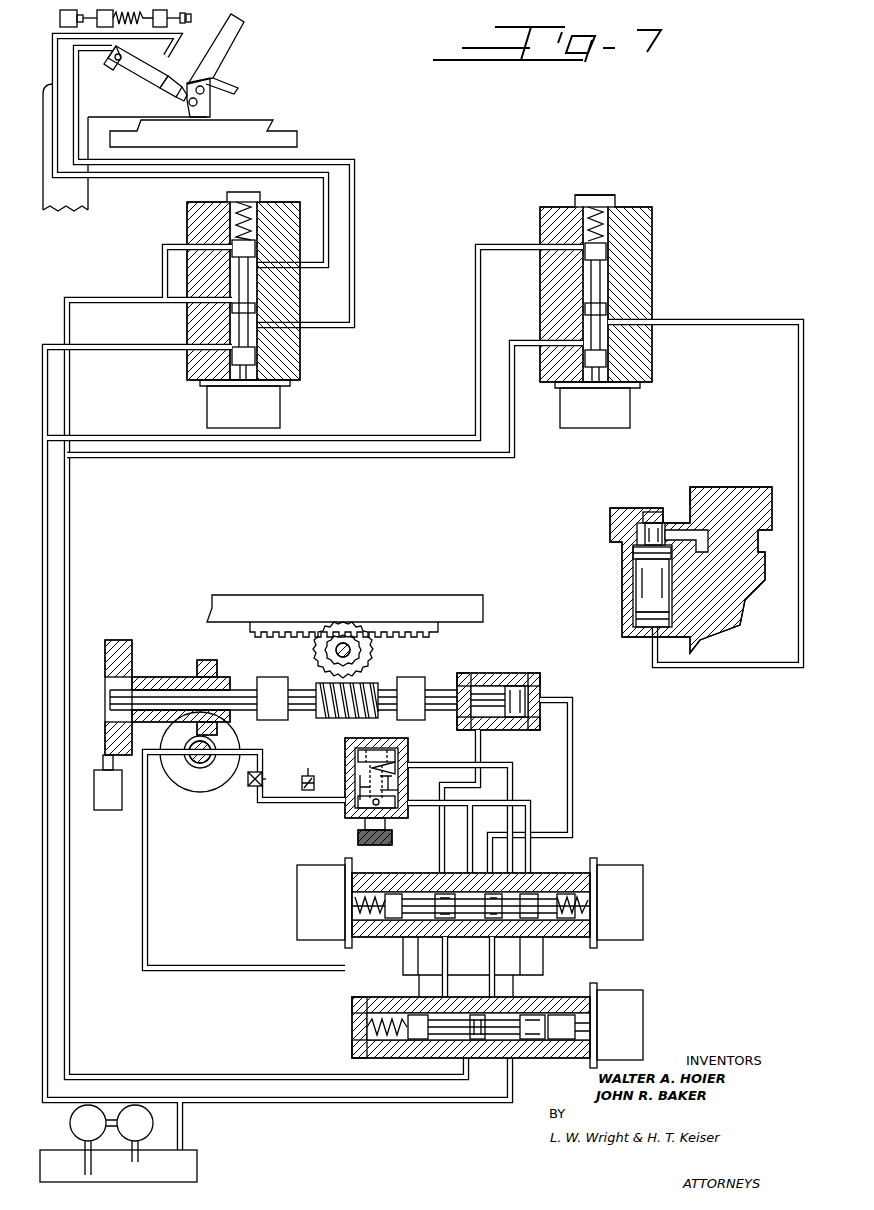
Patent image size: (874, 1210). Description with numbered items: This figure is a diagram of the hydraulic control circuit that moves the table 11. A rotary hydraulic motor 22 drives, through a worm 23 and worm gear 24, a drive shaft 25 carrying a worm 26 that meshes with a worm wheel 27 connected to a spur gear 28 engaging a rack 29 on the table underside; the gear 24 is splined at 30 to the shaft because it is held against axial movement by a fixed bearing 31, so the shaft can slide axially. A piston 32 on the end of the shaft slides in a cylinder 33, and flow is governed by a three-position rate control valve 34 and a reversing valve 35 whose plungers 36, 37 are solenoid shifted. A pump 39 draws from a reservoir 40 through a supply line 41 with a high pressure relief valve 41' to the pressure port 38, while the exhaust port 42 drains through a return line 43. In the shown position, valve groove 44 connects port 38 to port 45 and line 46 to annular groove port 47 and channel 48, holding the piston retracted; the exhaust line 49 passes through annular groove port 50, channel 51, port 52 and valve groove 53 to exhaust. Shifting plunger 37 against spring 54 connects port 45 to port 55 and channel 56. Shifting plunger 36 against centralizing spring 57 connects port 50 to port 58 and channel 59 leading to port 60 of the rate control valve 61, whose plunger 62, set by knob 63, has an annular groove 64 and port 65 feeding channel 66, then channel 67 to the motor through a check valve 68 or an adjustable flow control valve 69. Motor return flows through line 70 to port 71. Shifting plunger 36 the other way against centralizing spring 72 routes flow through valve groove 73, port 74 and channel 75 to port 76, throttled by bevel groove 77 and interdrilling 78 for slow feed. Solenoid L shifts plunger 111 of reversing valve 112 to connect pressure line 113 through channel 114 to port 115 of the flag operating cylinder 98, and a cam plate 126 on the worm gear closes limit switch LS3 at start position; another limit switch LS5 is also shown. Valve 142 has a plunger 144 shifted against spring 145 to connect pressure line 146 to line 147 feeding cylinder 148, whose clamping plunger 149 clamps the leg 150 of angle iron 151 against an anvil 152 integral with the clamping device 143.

The table 11 is at (418, 600).
The rotary hydraulic motor 22 is at (200, 790).
The worm 23 is at (206, 763).
The worm gear 24 is at (207, 665).
The drive shaft 25 is at (436, 693).
The worm 26 is at (380, 684).
The worm wheel 27 is at (315, 653).
The spur gear 28 is at (358, 657).
The rack 29 is at (412, 633).
The spline 30 is at (240, 690).
The fixed bearing 31 is at (150, 677).
The piston 32 is at (512, 686).
The cylinder 33 is at (492, 674).
The rate control valve 34 is at (560, 876).
The reversing valve 35 is at (352, 1028).
The valve plunger 36 is at (390, 892).
The valve plunger 37 is at (555, 1040).
The pressure port 38 is at (468, 1068).
The pump 39 is at (70, 1122).
The reservoir 40 is at (188, 1152).
The supply line 41 is at (261, 1064).
The high pressure relief valve 41' is at (144, 1131).
The exhaust port 42 is at (513, 1070).
The return line 43 is at (78, 345).
The valve groove 44 is at (450, 1040).
The port 45 is at (448, 986).
The line 46 is at (448, 962).
The annular groove port 47 is at (448, 944).
The channel 48 is at (483, 748).
The exhaust line 49 is at (572, 740).
The annular groove port 50 is at (495, 944).
The channel 51 is at (493, 962).
The port 52 is at (496, 982).
The valve groove 53 is at (514, 994).
The spring 54 is at (390, 1018).
The port 55 is at (418, 1018).
The channel 56 is at (543, 962).
The centralizing spring 57 is at (565, 930).
The port 58 is at (470, 872).
The channel 59 is at (531, 810).
The port 60 is at (404, 806).
The rate control valve 61 is at (345, 744).
The valve plunger 62 is at (362, 772).
The knob 63 is at (358, 836).
The annular groove 64 is at (360, 790).
The port 65 is at (322, 830).
The channel 66 is at (338, 805).
The channel 67 is at (270, 750).
The check valve 68 is at (304, 778).
The adjustable flow control valve 69 is at (262, 786).
The line 70 is at (260, 966).
The port 71 is at (420, 945).
The centralizing spring 72 is at (362, 930).
The valve groove 73 is at (521, 940).
The port 74 is at (508, 873).
The channel 75 is at (513, 772).
The port 76 is at (396, 766).
The bevel groove 77 is at (398, 778).
The interdrilling 78 is at (398, 792).
The flag operating cylinder 98 is at (138, 72).
The valve plunger 111 is at (265, 278).
The reversing valve 112 is at (288, 352).
The pressure line 113 is at (68, 296).
The channel 114 is at (353, 229).
The port 115 is at (127, 52).
The cam plate 126 is at (128, 640).
The valve 142 is at (640, 355).
The clamping device 143 is at (632, 552).
The plunger 144 is at (605, 283).
The spring 145 is at (596, 200).
The pressure line 146 is at (442, 457).
The line 147 is at (801, 418).
The cylinder 148 is at (635, 614).
The clamping plunger 149 is at (650, 585).
The leg 150 is at (673, 518).
The angle iron 151 is at (688, 497).
The anvil 152 is at (630, 507).
The limit switch LS3 is at (108, 782).
The limit switch LS5 is at (109, 18).